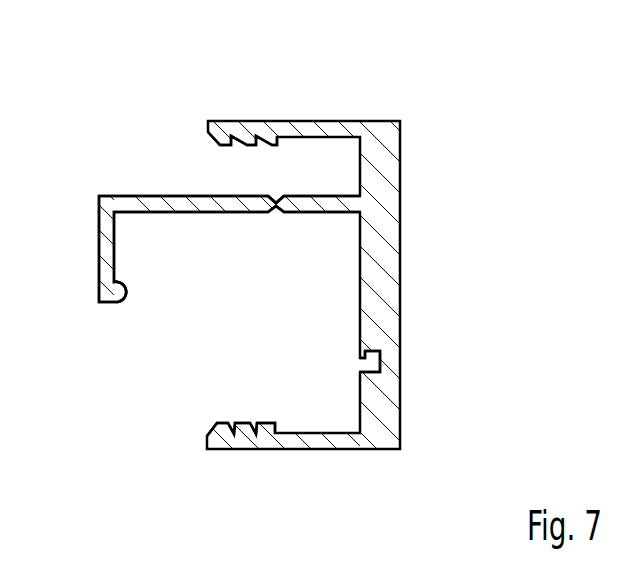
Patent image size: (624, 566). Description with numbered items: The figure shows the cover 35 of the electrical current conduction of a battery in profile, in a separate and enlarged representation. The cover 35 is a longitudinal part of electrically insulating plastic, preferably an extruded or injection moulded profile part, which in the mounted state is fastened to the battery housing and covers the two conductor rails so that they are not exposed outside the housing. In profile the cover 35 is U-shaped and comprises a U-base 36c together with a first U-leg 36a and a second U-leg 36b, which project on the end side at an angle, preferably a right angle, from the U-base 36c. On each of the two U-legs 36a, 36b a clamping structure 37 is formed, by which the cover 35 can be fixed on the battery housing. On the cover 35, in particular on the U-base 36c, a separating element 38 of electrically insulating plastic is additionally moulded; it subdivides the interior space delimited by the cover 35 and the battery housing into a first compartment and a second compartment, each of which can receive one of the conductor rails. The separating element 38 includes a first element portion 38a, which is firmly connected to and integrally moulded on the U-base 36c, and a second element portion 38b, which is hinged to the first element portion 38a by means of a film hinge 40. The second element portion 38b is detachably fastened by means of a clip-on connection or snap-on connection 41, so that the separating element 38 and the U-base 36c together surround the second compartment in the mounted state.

The cover 35 is at (466, 141).
The first U-leg 36a is at (312, 130).
The second U-leg 36b is at (319, 443).
The U-base 36c is at (387, 283).
The clamping structure 37 is at (250, 143).
The separating element 38 is at (119, 195).
The first element portion 38a is at (324, 213).
The second element portion 38b is at (107, 253).
The film hinge 40 is at (277, 213).
The clip-on connection or snap-on connection 41 is at (123, 293).